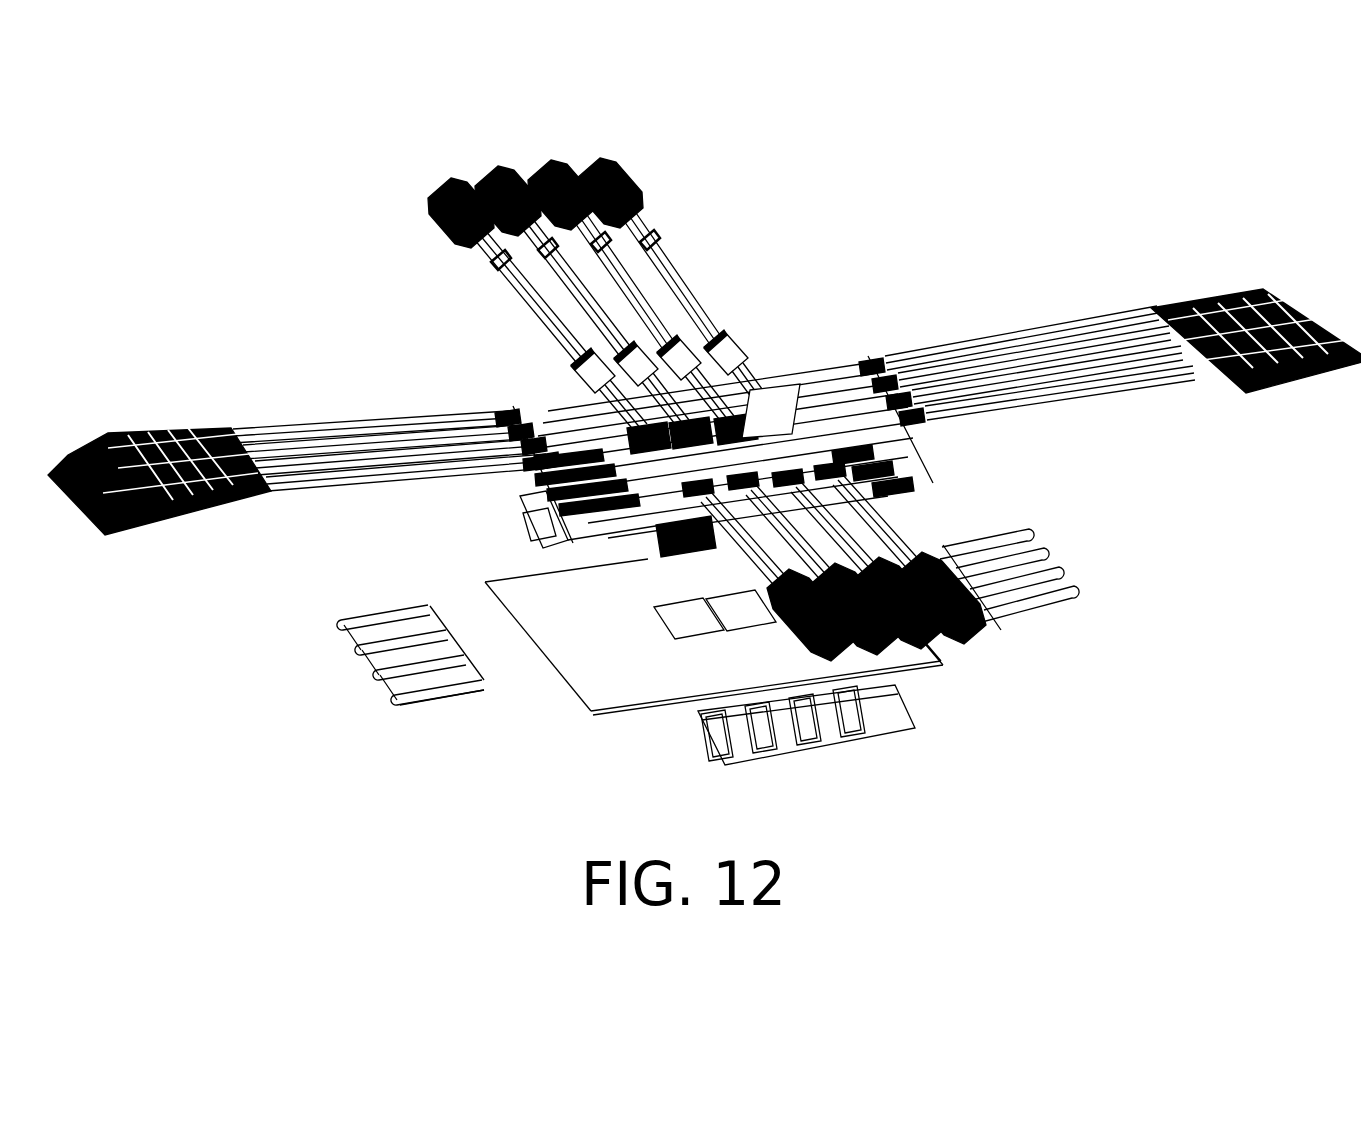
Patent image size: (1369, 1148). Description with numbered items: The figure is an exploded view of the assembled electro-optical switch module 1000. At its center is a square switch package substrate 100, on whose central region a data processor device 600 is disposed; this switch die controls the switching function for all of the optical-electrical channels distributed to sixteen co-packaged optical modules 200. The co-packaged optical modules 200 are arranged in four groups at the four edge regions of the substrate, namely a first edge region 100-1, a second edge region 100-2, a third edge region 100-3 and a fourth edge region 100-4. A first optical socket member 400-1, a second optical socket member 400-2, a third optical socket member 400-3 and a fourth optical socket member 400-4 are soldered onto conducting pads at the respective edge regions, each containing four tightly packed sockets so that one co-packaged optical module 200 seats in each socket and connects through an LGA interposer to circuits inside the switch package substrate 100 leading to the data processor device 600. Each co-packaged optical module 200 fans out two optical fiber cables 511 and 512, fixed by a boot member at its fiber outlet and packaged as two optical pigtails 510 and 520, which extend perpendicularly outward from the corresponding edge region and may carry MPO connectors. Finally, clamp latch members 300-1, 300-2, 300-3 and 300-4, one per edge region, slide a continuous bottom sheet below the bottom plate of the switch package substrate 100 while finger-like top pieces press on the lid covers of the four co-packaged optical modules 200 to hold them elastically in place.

The electro-optical switch module 1000 is at (741, 178).
The switch package substrate 100 is at (735, 655).
The first edge region 100-1 is at (545, 657).
The second edge region 100-2 is at (648, 693).
The third edge region 100-3 is at (967, 675).
The fourth edge region 100-4 is at (587, 562).
The co-packaged optical module 200 is at (568, 448).
The clamp latch member 300-1 is at (410, 685).
The clamp latch member 300-2 is at (878, 733).
The clamp latch member 300-3 is at (1047, 608).
The clamp latch member 300-4 is at (527, 528).
The first optical socket member 400-1 is at (510, 488).
The second optical socket member 400-2 is at (657, 550).
The third optical socket member 400-3 is at (900, 482).
The fourth optical socket member 400-4 is at (740, 400).
The optical pigtail 510 is at (385, 474).
The optical fiber cable 511 is at (350, 460).
The optical fiber cable 512 is at (290, 490).
The optical pigtail 520 is at (193, 522).
The data processor device 600 is at (657, 613).